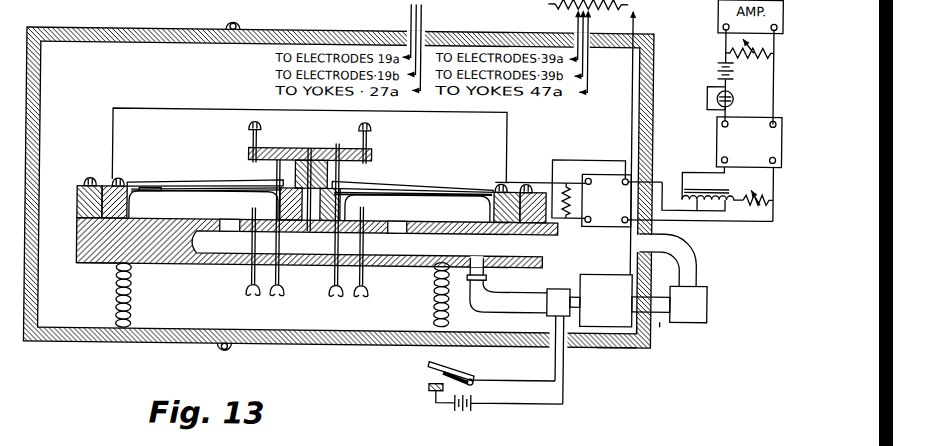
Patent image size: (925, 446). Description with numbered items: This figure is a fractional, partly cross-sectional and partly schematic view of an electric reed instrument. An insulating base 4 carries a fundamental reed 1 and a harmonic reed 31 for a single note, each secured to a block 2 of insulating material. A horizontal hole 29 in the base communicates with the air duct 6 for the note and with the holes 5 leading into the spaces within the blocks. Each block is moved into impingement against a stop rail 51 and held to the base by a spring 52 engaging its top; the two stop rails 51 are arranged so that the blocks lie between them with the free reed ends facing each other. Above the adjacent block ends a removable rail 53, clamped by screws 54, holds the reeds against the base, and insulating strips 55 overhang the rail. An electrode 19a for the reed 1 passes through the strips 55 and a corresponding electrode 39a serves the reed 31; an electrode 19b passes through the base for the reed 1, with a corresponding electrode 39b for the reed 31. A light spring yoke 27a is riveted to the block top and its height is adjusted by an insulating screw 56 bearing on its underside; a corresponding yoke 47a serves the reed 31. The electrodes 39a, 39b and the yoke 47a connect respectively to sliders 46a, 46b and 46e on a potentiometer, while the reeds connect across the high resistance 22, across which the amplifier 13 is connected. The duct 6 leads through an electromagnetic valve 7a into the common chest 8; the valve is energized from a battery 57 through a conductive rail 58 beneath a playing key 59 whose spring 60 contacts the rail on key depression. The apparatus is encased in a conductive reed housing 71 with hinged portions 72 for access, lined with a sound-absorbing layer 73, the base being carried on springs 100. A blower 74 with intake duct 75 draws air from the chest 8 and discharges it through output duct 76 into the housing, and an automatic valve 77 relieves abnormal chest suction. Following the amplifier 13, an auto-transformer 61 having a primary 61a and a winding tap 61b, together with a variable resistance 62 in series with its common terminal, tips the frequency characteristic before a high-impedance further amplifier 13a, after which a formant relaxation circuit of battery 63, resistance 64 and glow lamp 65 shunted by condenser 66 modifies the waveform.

The fundamental reed 1 is at (168, 180).
The block 2 is at (79, 245).
The base 4 is at (113, 255).
The holes 5 is at (229, 229).
The air duct 6 is at (478, 274).
The valve 7a is at (562, 283).
The chest 8 is at (645, 326).
The amplifier 13 is at (597, 221).
The further amplifier 13a is at (718, 128).
The electrode 19a is at (264, 124).
The electrode 19b is at (248, 288).
The high resistance 22 is at (571, 176).
The yoke 27a is at (264, 186).
The horizontal hole 29 is at (518, 241).
The harmonic reed 31 is at (398, 180).
The electrode 39a is at (370, 124).
The electrode 39b is at (368, 292).
The slider 46a is at (553, 2).
The slider 46b is at (572, 8).
The slider 46e is at (630, 12).
The yoke 47a is at (341, 187).
The stop rail 51 is at (79, 205).
The spring 52 is at (91, 177).
The removable rail 53 is at (318, 160).
The screws 54 is at (311, 145).
The insulating strips 55 is at (340, 148).
The insulating screw 56 is at (276, 292).
The battery 57 is at (477, 399).
The conductive rail 58 is at (432, 383).
The playing key 59 is at (478, 370).
The spring 60 is at (431, 365).
The auto-transformer 61 is at (697, 183).
The primary 61a is at (727, 206).
The coil tap 61b is at (697, 206).
The variable resistance 62 is at (757, 198).
The battery 63 is at (718, 63).
The resistance 64 is at (758, 56).
The glow lamp 65 is at (735, 90).
The condenser 66 is at (708, 91).
The reed housing 71 is at (647, 28).
The hinged portions 72 is at (297, 27).
The layer 73 is at (608, 341).
The blower 74 is at (711, 299).
The intake duct 75 is at (664, 316).
The output duct 76 is at (700, 253).
The automatic valve 77 is at (609, 268).
The springs 100 is at (135, 303).